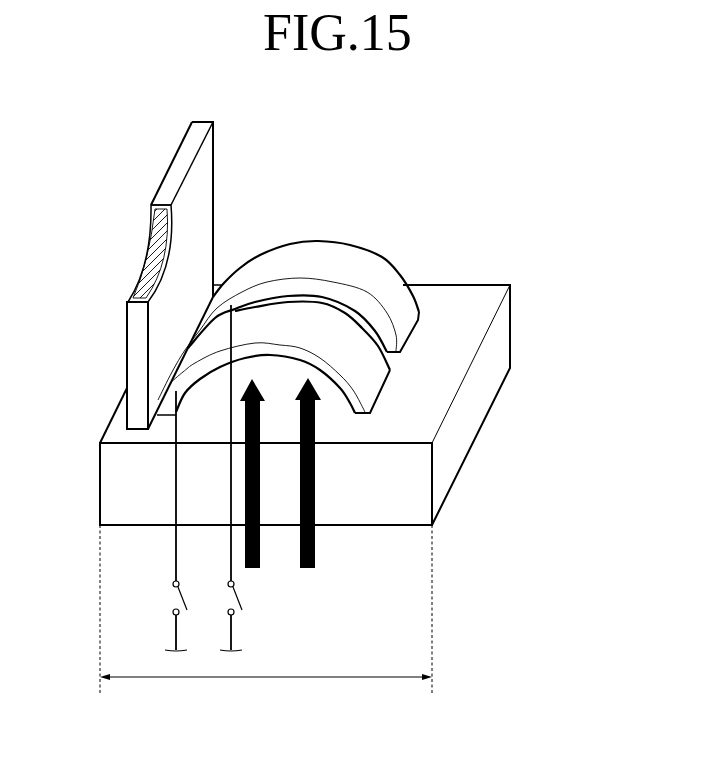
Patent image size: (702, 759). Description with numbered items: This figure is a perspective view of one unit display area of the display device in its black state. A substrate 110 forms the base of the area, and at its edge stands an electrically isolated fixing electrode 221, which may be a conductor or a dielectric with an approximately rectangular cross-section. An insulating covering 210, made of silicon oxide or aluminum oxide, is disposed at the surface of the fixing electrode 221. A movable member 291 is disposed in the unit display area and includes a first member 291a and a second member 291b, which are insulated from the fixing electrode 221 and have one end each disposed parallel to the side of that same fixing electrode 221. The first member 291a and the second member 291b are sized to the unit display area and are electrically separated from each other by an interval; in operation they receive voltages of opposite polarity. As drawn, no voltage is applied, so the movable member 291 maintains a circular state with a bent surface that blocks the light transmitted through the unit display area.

The substrate 110 is at (470, 415).
The insulating covering 210 is at (145, 274).
The fixing electrode 221 is at (151, 253).
The movable member 291 is at (288, 265).
The first member 291a is at (288, 320).
The second member 291b is at (333, 263).